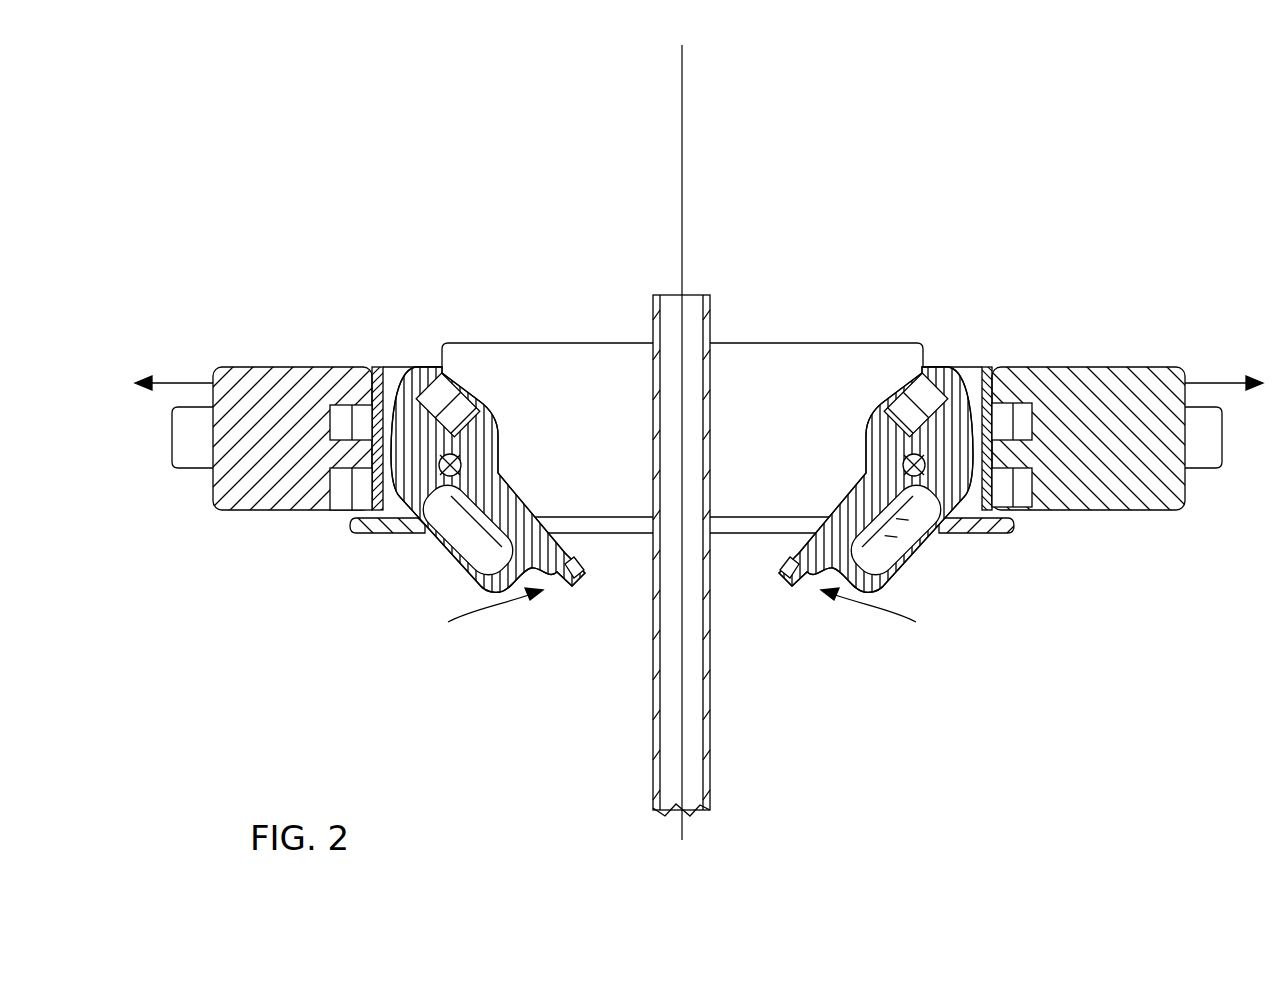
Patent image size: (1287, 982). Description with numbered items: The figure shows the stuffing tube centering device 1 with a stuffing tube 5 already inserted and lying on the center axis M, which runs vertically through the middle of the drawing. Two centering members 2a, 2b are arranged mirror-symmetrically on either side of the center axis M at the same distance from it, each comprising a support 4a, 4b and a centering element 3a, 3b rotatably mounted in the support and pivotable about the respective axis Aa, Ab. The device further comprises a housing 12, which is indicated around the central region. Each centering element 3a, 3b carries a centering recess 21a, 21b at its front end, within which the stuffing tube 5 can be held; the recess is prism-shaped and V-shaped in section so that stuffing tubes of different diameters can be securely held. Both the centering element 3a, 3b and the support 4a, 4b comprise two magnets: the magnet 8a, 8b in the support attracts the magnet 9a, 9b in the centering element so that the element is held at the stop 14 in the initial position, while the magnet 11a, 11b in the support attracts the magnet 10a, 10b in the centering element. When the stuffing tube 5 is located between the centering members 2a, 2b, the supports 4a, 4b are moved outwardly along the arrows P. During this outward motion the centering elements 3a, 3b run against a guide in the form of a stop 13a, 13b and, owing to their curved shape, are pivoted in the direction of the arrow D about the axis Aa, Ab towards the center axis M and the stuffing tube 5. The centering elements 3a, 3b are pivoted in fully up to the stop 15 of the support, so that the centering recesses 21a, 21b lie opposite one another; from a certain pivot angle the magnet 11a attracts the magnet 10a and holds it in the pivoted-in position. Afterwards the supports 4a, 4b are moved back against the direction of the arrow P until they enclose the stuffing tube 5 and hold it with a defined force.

The stuffing tube centering device 1 is at (896, 257).
The centering member 2a is at (334, 545).
The centering member 2b is at (1030, 545).
The centering element 3a is at (554, 571).
The centering element 3b is at (810, 571).
The support 4a is at (282, 367).
The support 4b is at (1082, 367).
The stuffing tube 5 is at (653, 312).
The magnet 8a is at (338, 512).
The magnet 8b is at (1024, 512).
The magnet 9a is at (438, 542).
The magnet 9b is at (926, 542).
The magnet 10a is at (478, 388).
The magnet 10b is at (886, 388).
The magnet 11a is at (352, 405).
The magnet 11b is at (1008, 403).
The housing 12 is at (765, 343).
The stop 13a is at (372, 535).
The stop 13b is at (992, 535).
The stop 14 is at (380, 485).
The stop 15 is at (380, 385).
The centering recess 21a is at (582, 582).
The centering recess 21b is at (782, 582).
The axis Aa is at (462, 466).
The axis Ab is at (902, 466).
The arrow D is at (682, 620).
The center axis M is at (682, 458).
The arrow P is at (699, 367).